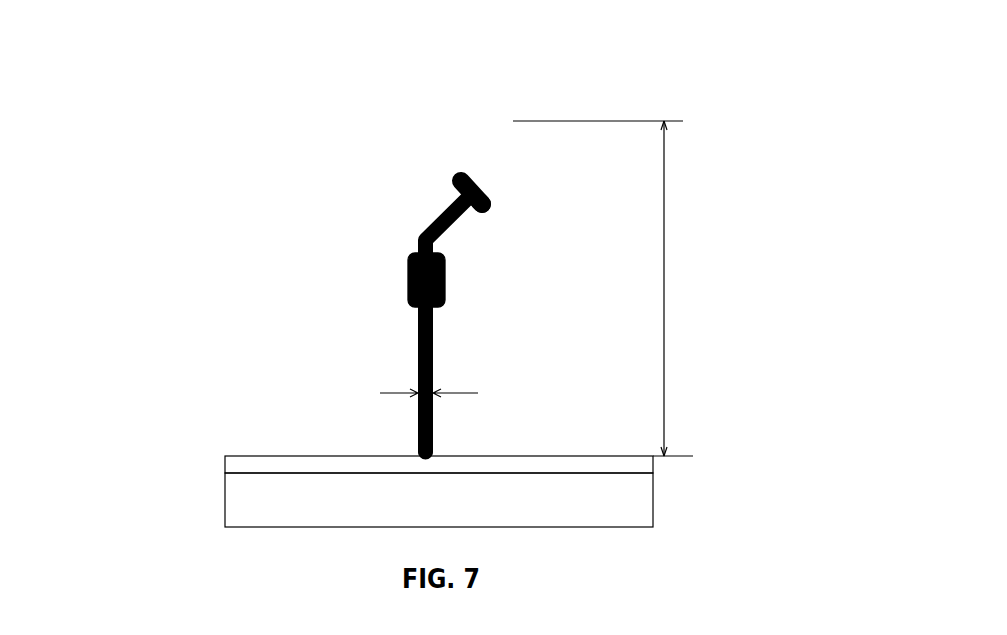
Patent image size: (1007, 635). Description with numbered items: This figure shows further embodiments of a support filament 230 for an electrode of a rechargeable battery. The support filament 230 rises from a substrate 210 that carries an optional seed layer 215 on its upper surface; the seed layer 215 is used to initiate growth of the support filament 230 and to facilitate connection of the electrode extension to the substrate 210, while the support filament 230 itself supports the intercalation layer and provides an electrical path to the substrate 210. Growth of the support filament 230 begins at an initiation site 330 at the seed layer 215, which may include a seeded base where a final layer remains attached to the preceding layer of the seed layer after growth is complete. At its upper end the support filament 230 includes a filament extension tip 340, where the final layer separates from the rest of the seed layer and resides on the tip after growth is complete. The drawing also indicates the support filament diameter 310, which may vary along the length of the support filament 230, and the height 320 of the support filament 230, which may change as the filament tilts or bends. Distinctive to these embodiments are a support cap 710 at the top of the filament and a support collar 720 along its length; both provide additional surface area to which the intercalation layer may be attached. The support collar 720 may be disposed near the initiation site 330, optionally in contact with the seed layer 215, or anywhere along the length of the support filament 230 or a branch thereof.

The substrate 210 is at (235, 500).
The seed layer 215 is at (237, 466).
The support filament 230 is at (418, 378).
The support filament diameter 310 is at (481, 393).
The height 320 is at (635, 288).
The initiation site 330 is at (418, 457).
The filament extension tip 340 is at (484, 190).
The support cap 710 is at (458, 184).
The support collar 720 is at (408, 292).